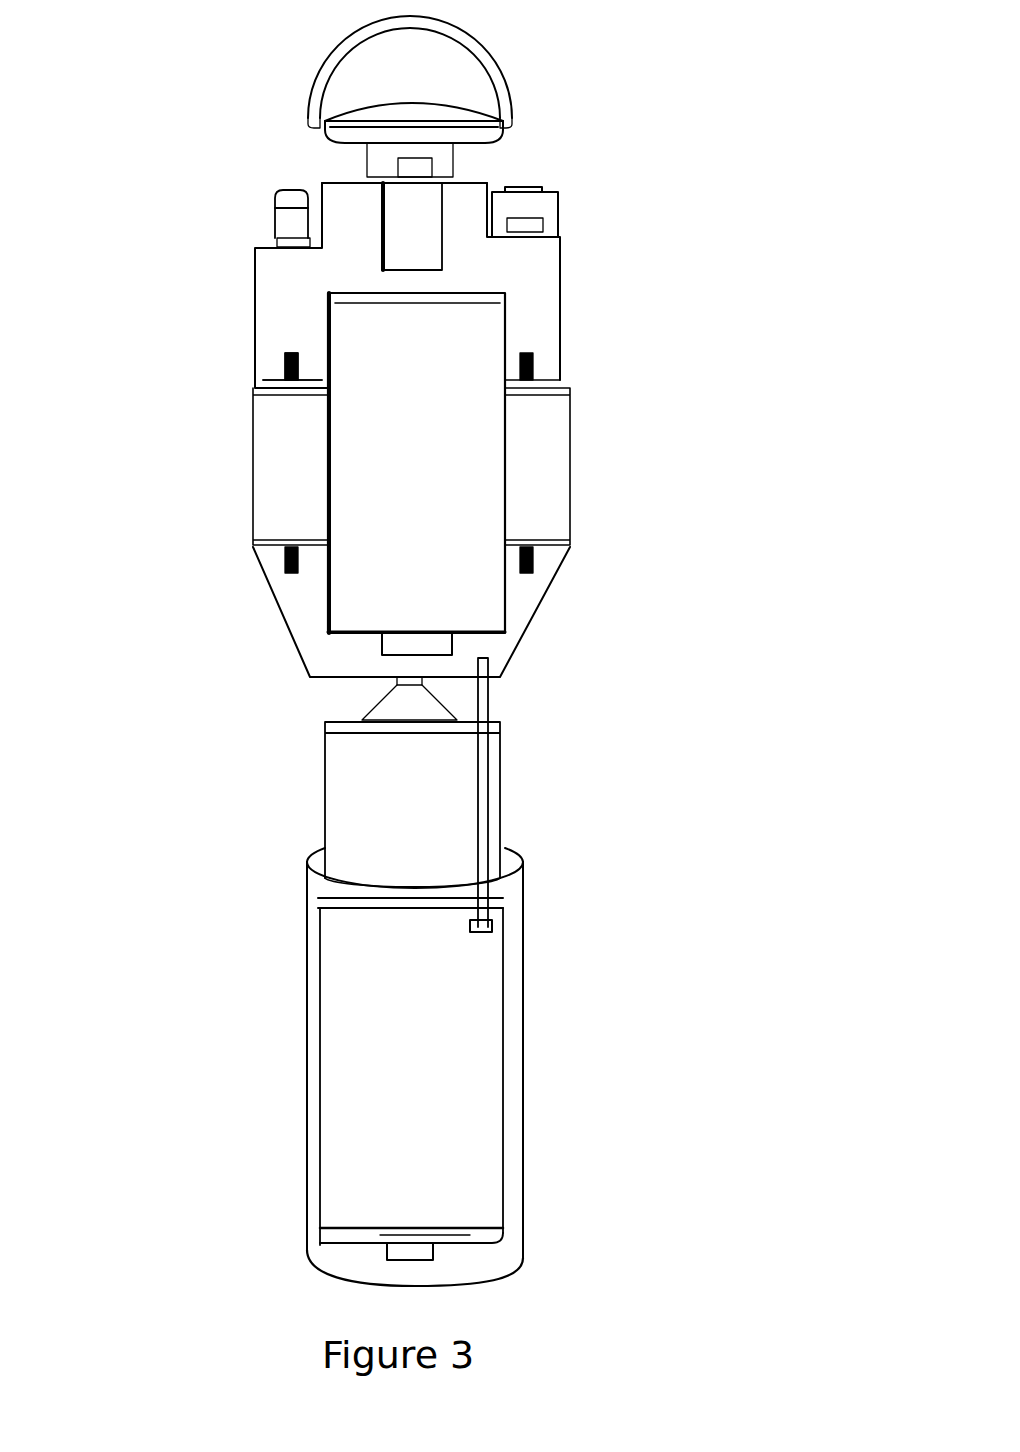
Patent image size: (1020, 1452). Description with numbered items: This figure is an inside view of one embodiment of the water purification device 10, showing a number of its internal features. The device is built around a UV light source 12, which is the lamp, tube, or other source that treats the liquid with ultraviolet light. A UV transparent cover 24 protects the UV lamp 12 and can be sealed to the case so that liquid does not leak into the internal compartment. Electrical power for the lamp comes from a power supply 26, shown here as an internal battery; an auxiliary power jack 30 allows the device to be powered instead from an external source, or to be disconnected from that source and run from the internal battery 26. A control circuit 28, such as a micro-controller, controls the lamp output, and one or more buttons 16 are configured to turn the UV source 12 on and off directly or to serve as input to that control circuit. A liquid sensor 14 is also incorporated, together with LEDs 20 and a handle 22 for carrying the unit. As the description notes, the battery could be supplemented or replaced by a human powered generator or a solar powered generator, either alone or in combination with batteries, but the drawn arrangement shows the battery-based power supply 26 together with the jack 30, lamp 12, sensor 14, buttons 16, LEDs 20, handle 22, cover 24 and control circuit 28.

The flashlight device 10 is at (607, 504).
The UV light source 12 is at (490, 1217).
The liquid sensor 14 is at (493, 927).
The button 16 is at (558, 208).
The LEDs 20 is at (280, 190).
The handle 22 is at (508, 73).
The UV transparent cover 24 is at (307, 1250).
The power supply 26 is at (480, 613).
The control circuit 28 is at (253, 373).
The auxiliary power jack 30 is at (432, 248).